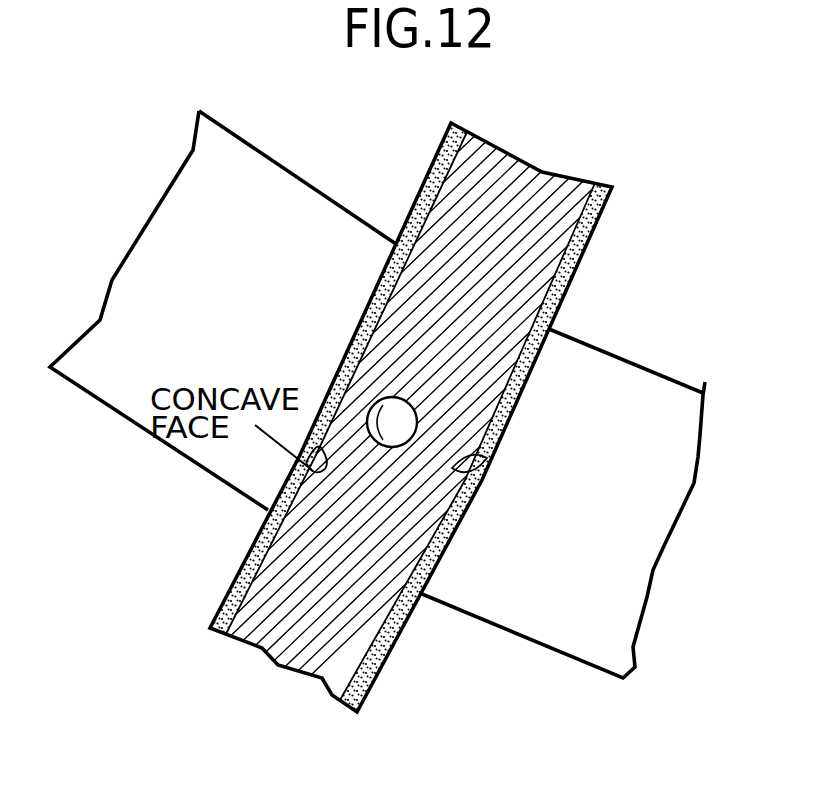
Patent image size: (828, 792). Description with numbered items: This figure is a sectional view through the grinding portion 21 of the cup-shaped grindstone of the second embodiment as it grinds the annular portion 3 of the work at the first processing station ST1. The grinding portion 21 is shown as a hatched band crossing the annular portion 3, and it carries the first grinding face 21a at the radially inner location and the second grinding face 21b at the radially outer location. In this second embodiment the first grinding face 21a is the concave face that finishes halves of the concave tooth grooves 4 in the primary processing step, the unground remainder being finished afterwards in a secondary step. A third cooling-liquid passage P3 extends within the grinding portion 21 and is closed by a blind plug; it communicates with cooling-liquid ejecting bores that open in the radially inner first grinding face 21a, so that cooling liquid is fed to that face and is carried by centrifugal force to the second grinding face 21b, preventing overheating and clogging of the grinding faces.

The annular portion 3 is at (630, 377).
The grinding portion 21 is at (414, 396).
The first grinding face 21a is at (347, 357).
The second grinding face 21b is at (525, 388).
The tooth groove 4 is at (463, 478).
The third cooling-liquid passage P3 is at (370, 403).
The first processing station ST1 is at (265, 464).